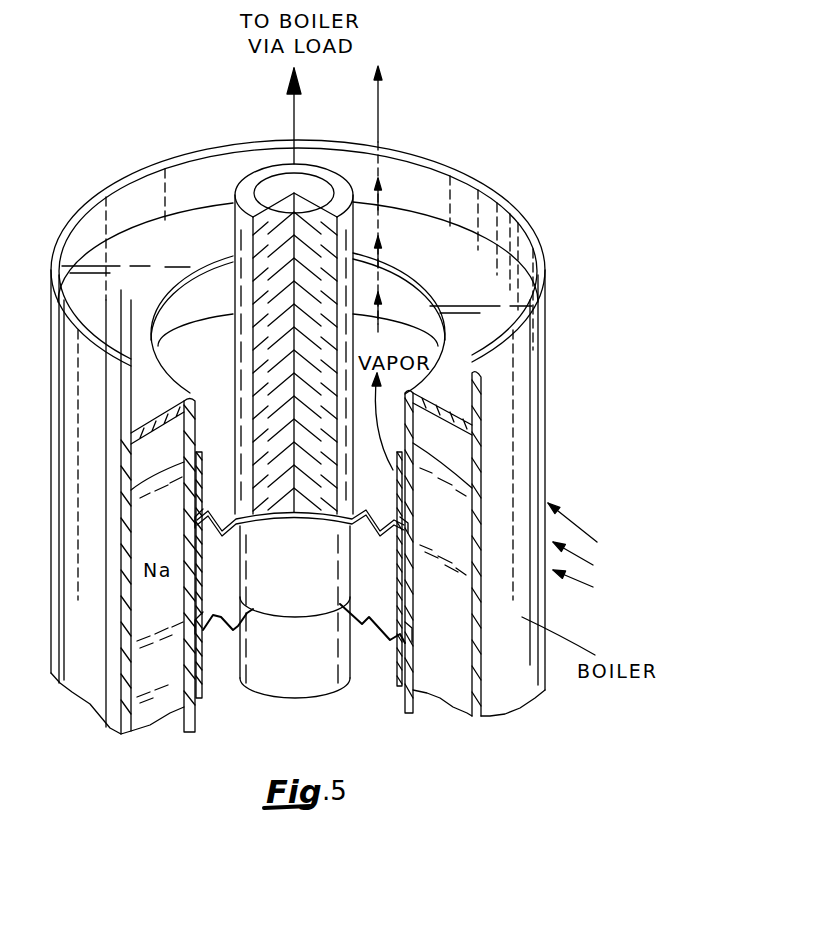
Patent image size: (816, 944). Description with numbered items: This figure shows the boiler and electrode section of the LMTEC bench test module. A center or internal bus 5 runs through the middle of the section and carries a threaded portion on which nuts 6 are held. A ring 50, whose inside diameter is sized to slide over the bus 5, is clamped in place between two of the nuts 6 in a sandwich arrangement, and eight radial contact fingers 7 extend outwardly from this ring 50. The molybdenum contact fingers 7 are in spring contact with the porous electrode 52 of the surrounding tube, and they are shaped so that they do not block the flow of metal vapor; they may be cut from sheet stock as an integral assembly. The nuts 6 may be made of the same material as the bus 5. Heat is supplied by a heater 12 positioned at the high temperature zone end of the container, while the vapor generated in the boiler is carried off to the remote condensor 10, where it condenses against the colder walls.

The center or internal bus 5 is at (312, 186).
The nuts 6 is at (313, 594).
The radial contact fingers 7 is at (372, 628).
The condensor 10 is at (380, 113).
The heater 12 is at (683, 614).
The ring 50 is at (297, 617).
The porous electrode 52 is at (197, 677).